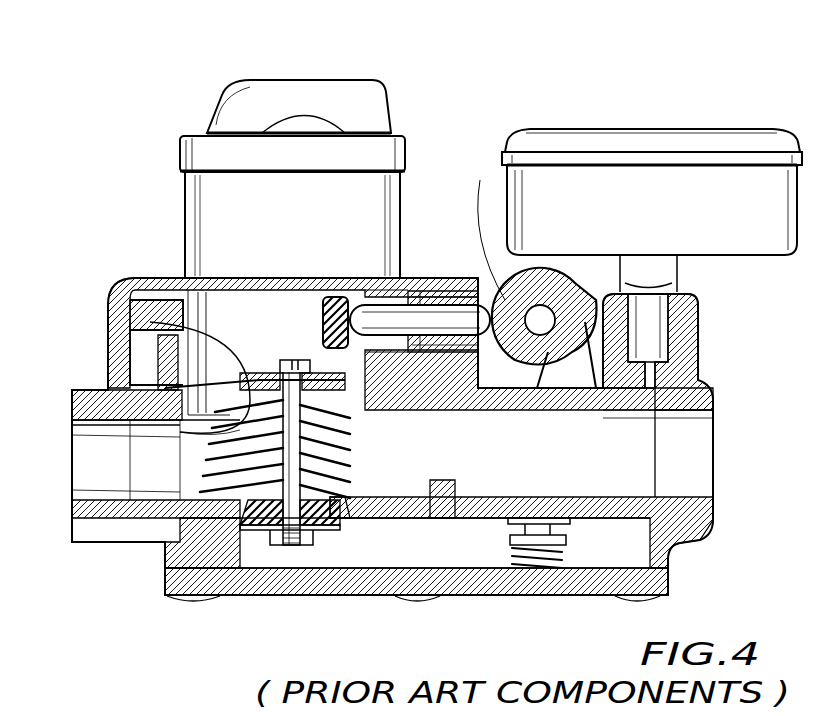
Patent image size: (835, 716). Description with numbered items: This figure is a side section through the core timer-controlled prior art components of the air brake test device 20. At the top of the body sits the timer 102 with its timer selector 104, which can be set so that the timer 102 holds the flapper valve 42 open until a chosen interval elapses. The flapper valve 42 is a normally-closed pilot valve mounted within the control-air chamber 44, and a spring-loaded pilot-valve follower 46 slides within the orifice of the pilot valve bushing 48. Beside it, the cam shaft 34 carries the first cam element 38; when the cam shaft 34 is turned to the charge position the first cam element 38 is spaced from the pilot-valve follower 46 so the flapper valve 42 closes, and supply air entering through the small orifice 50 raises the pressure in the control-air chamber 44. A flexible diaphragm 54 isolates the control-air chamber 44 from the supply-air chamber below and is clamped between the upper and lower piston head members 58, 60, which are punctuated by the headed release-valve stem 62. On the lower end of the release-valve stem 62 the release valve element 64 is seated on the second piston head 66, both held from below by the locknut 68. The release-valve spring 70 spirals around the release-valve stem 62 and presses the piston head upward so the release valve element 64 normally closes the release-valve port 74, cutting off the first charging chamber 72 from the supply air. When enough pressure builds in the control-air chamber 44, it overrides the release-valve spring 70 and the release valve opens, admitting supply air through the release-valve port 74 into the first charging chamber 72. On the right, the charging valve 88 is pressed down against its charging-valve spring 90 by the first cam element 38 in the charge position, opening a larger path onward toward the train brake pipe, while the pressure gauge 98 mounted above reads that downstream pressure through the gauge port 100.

The remote-controlled air brake test device 20 is at (635, 58).
The cam shaft 34 is at (540, 318).
The first cam element 38 is at (560, 287).
The flapper valve 42 is at (330, 300).
The control-air chamber 44 is at (188, 278).
The pilot-valve follower 46 is at (433, 300).
The pilot valve bushing 48 is at (440, 320).
The orifice 50 is at (150, 290).
The diaphragm 54 is at (195, 385).
The upper piston head member 58 is at (165, 308).
The lower piston head member 60 is at (178, 432).
The release-valve stem 62 is at (290, 462).
The release valve element 64 is at (262, 520).
The second piston head 66 is at (272, 525).
The locknut 68 is at (300, 545).
The release-valve spring 70 is at (210, 484).
The first charging chamber 72 is at (405, 550).
The release-valve port 74 is at (338, 520).
The charging valve 88 is at (603, 375).
The charging-valve spring 90 is at (530, 555).
The pressure gauge 98 is at (730, 180).
The gauge port 100 is at (650, 385).
The timer 102 is at (358, 142).
The timer selector 104 is at (362, 105).